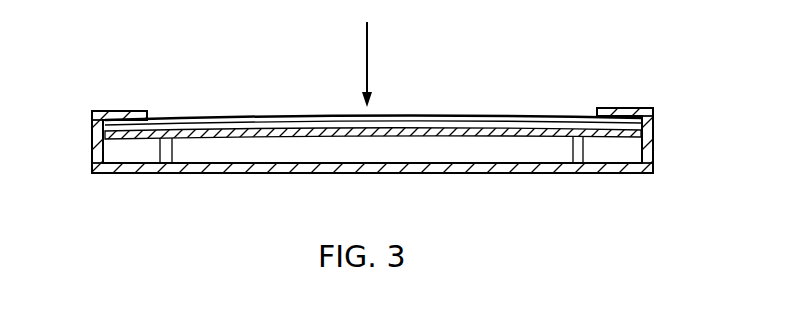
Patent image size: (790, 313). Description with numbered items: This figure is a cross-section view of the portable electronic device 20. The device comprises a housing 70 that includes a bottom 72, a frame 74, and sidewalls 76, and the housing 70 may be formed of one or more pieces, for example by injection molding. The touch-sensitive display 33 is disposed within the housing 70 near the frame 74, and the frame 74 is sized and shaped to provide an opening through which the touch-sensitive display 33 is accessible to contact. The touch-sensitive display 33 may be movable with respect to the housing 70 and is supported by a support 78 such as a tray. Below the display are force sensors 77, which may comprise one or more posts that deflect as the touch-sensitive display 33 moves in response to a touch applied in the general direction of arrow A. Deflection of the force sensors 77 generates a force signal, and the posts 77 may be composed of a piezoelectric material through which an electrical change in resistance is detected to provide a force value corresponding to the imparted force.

The portable electronic device 20 is at (370, 113).
The touch-sensitive display 33 is at (453, 116).
The housing 70 is at (651, 108).
The bottom 72 is at (465, 172).
The frame 74 is at (123, 110).
The sidewalls 76 is at (655, 123).
The force sensors 77 is at (165, 158).
The support 78 is at (218, 138).